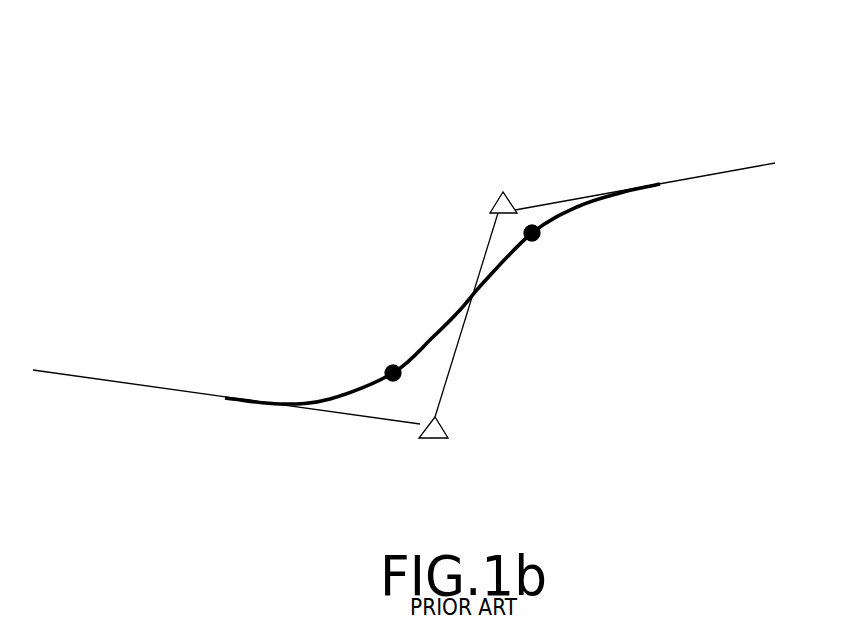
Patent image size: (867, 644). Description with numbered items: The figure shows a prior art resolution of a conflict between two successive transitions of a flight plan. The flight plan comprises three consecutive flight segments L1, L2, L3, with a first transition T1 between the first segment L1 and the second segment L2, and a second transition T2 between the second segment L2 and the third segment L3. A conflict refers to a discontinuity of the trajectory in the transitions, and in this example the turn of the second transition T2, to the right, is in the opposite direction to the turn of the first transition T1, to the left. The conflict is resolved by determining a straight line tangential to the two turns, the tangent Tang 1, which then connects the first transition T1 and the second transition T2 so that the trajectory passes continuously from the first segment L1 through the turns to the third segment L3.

The first flight segment L1 is at (188, 406).
The second flight segment L2 is at (480, 228).
The third flight segment L3 is at (712, 156).
The first transition T1 is at (417, 340).
The second transition T2 is at (588, 216).
The tangent Tang 1 is at (489, 310).